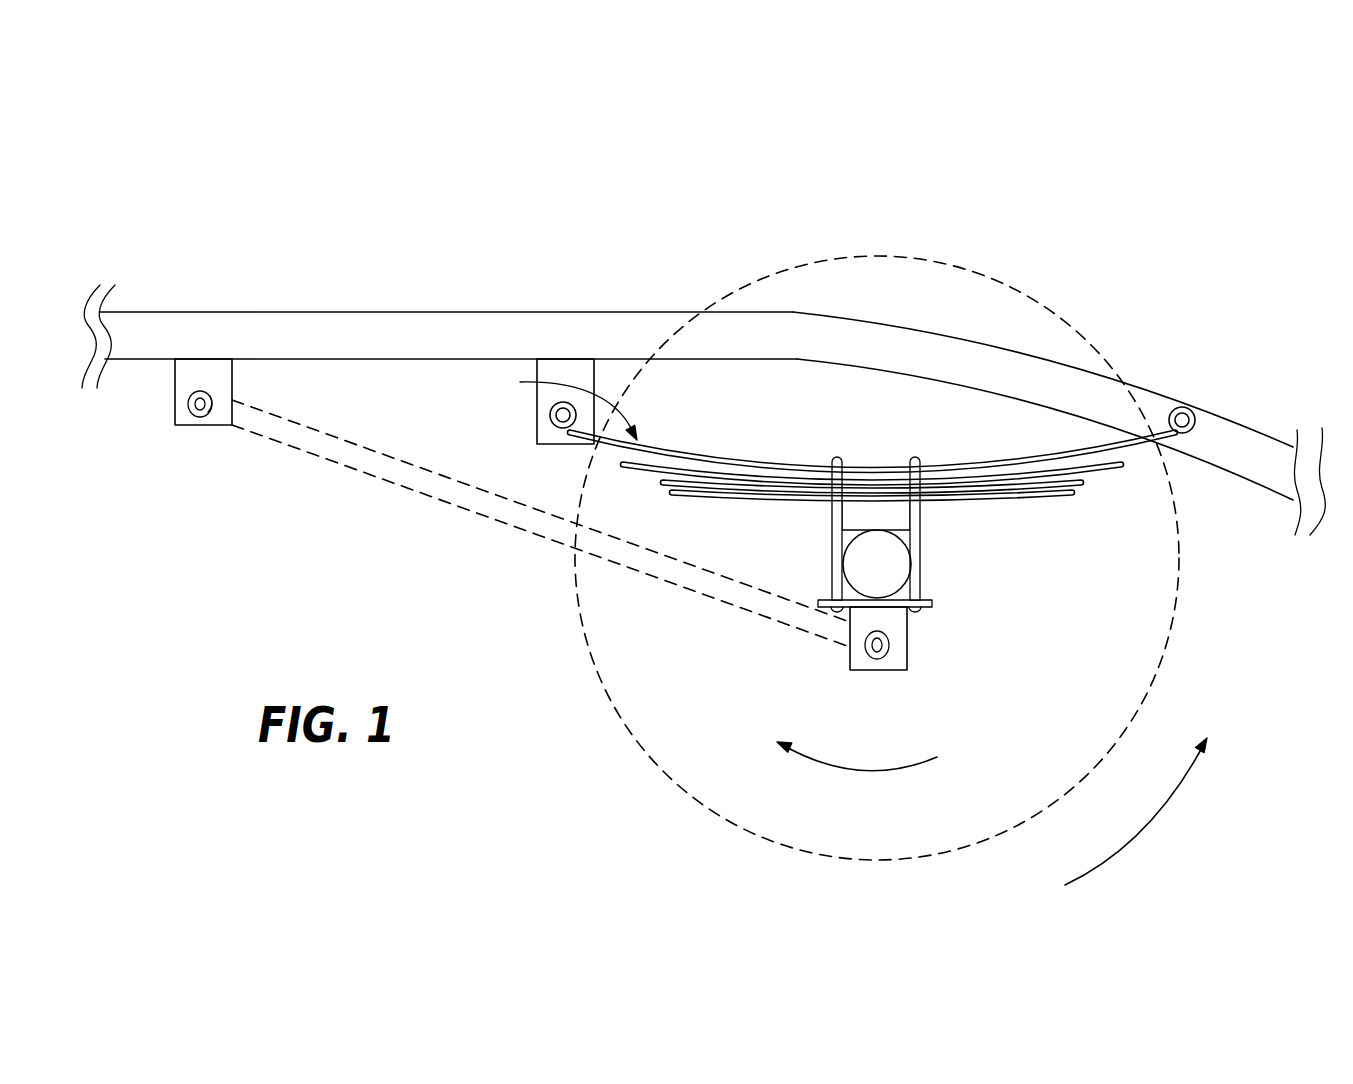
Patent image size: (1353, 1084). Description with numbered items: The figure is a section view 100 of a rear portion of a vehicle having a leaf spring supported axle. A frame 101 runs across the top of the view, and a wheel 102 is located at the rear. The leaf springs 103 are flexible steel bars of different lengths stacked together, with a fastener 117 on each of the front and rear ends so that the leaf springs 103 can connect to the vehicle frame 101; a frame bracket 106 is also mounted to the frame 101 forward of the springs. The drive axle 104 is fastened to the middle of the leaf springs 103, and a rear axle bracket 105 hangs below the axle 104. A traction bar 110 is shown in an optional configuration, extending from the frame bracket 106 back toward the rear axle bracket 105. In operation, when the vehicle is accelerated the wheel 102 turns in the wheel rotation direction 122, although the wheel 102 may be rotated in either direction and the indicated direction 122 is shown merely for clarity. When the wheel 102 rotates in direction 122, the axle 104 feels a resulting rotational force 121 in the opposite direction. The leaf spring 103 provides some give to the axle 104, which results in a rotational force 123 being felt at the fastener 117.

The section view 100 is at (680, 146).
The frame 101 is at (375, 312).
The wheel 102 is at (1043, 305).
The leaf springs 103 is at (1032, 497).
The drive axle 104 is at (898, 555).
The rear axle bracket 105 is at (910, 647).
The frame bracket 106 is at (201, 427).
The traction bar 110 is at (420, 500).
The fastener 117 is at (548, 418).
The rotational force indicator 121 is at (850, 770).
The wheel rotation direction indicator 122 is at (1138, 832).
The rotational force 123 is at (557, 404).